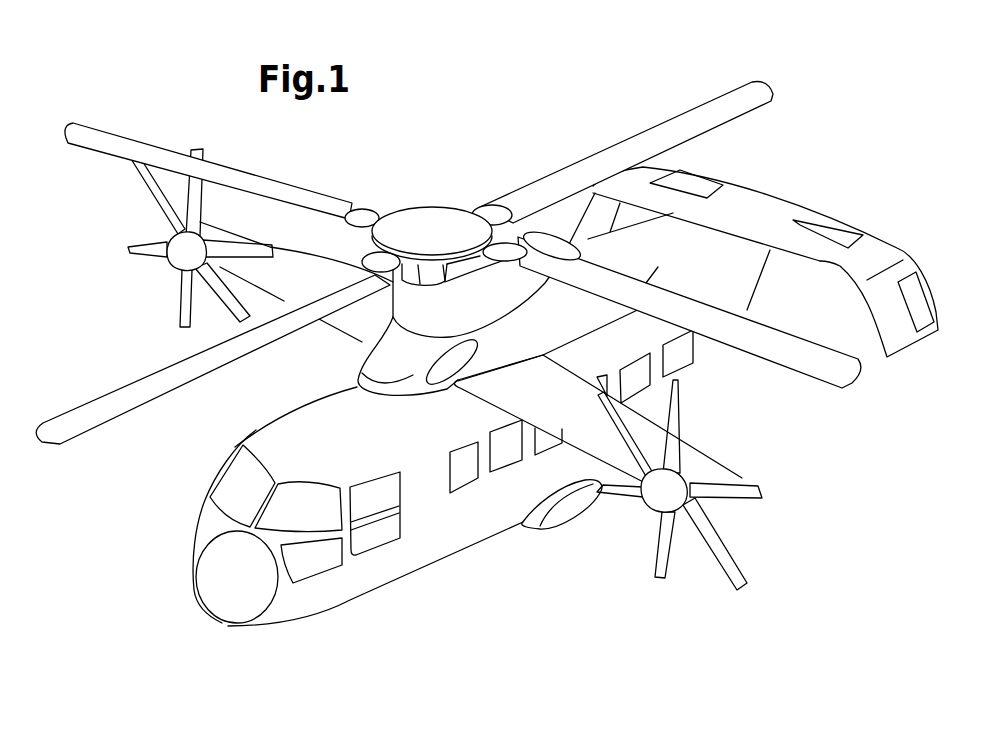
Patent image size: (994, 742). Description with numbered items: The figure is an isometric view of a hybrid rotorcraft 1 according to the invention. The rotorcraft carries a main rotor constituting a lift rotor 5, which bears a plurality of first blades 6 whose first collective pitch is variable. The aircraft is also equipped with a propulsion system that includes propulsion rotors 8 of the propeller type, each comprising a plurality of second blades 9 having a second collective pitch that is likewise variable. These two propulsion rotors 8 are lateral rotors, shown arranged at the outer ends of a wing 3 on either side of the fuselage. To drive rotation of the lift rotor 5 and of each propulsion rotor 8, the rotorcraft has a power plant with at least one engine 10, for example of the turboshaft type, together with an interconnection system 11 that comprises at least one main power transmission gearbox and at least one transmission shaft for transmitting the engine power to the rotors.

The hybrid rotorcraft 1 is at (542, 573).
The wing 3 is at (343, 337).
The lift rotor 5 is at (448, 254).
The first blades 6 is at (95, 405).
The propulsion rotor 8 is at (440, 399).
The second blades 9 is at (157, 249).
The engine 10 is at (446, 360).
The interconnection system 11 is at (428, 275).